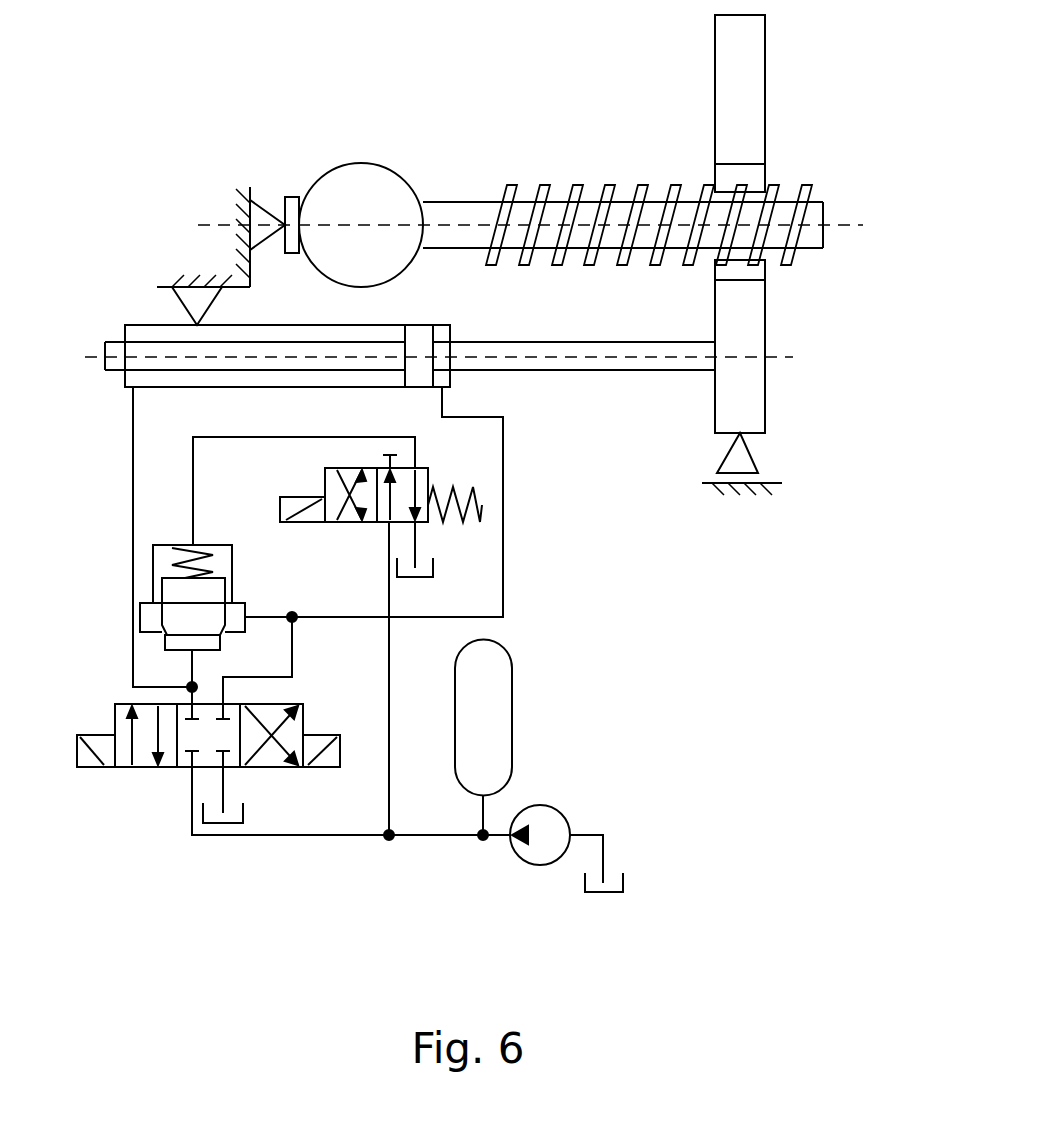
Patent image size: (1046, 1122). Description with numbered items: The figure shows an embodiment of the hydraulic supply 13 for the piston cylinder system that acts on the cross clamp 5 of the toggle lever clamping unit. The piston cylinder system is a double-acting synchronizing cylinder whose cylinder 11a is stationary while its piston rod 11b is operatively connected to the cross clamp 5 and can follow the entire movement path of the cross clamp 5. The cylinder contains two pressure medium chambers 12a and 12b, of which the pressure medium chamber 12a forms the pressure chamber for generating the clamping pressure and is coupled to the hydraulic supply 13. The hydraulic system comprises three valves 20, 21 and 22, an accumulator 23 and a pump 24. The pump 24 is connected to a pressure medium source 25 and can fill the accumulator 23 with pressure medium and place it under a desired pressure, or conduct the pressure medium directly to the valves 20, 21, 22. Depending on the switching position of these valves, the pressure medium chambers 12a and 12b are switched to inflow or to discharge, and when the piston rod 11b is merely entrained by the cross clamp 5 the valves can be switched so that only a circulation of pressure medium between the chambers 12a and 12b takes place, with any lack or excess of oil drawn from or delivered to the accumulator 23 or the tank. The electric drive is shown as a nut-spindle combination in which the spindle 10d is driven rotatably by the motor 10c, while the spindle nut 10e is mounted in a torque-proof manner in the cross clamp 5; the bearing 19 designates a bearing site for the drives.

The cross clamp 5 is at (755, 312).
The electric motor 10c is at (362, 177).
The spindle 10d is at (650, 210).
The spindle nut 10e is at (752, 177).
The cylinder 11a is at (137, 323).
The piston rod 11b is at (608, 350).
The pressure medium chamber 12a is at (185, 377).
The pressure medium chamber 12b is at (453, 330).
The hydraulic supply 13 is at (668, 672).
The bearing 19 is at (213, 248).
The valve 20 is at (115, 715).
The valve 21 is at (325, 482).
The valve 22 is at (232, 556).
The accumulator 23 is at (488, 708).
The pump 24 is at (537, 855).
The pressure medium source 25 is at (613, 895).